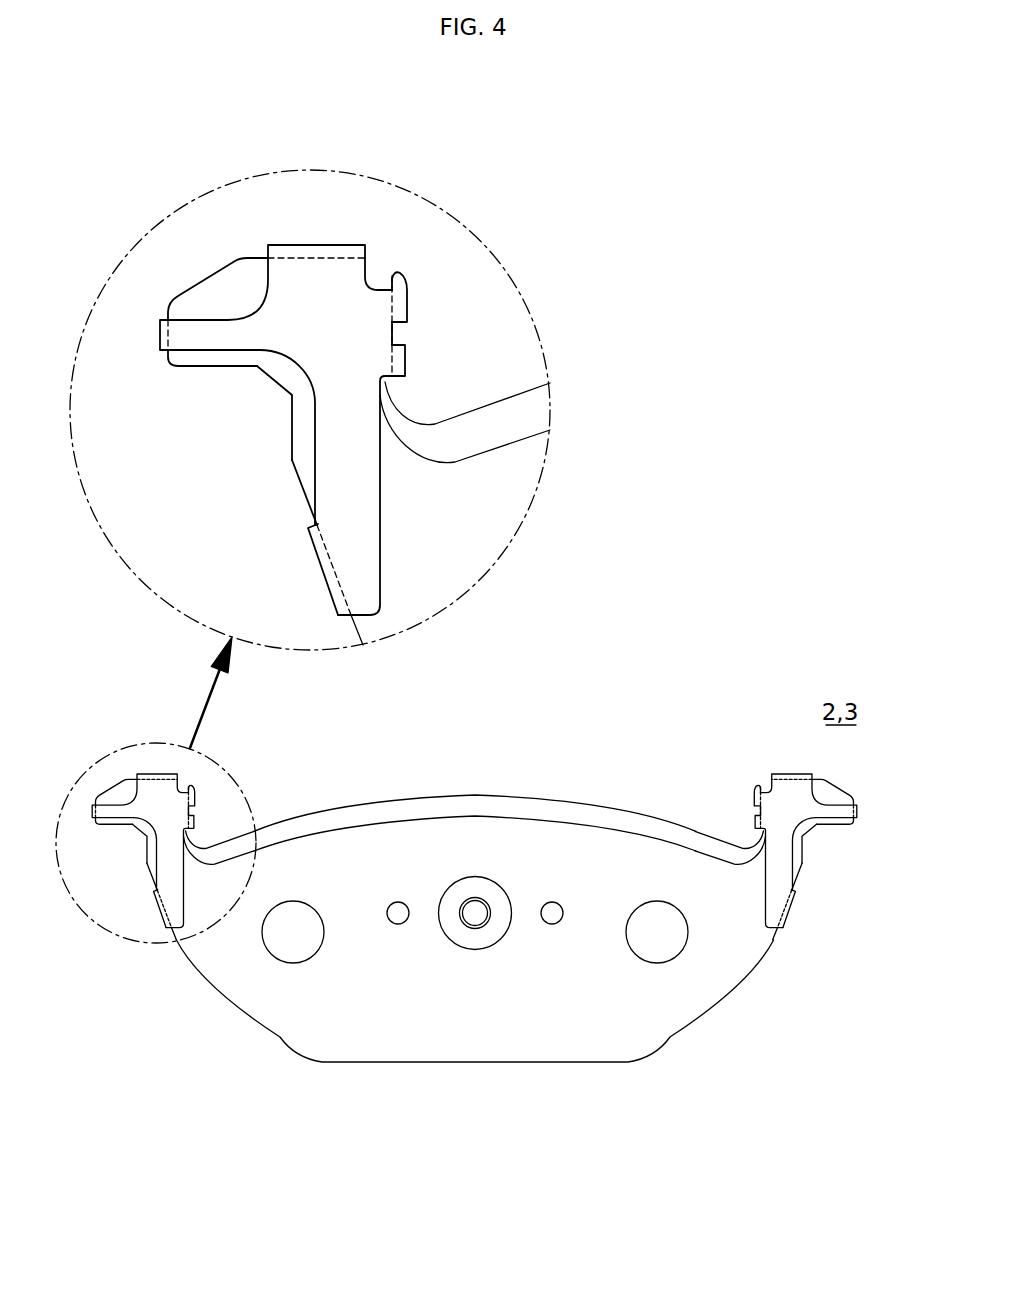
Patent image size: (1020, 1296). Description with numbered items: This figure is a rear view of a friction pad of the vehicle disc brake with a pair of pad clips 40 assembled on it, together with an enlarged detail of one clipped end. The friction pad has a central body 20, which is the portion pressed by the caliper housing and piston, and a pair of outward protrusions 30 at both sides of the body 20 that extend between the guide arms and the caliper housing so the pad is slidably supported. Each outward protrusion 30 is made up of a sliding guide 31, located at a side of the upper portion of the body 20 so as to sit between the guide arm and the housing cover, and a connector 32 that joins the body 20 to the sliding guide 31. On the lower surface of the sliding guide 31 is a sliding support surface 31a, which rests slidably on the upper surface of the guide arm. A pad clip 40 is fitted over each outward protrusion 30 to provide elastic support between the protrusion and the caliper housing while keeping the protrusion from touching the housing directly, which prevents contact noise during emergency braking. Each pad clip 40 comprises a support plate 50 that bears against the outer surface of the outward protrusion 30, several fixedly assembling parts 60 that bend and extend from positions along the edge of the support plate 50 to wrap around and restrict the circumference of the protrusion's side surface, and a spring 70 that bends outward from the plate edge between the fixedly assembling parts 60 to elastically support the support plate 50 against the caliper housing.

The body 20 is at (533, 385).
The outward protrusion 30 is at (261, 385).
The sliding guide 31 is at (210, 278).
The sliding support surface 31a is at (192, 367).
The connector 32 is at (292, 463).
The pad clip 40 is at (391, 496).
The support plate 50 is at (340, 375).
The fixedly assembling part 60 is at (322, 245).
The spring 70 is at (408, 305).